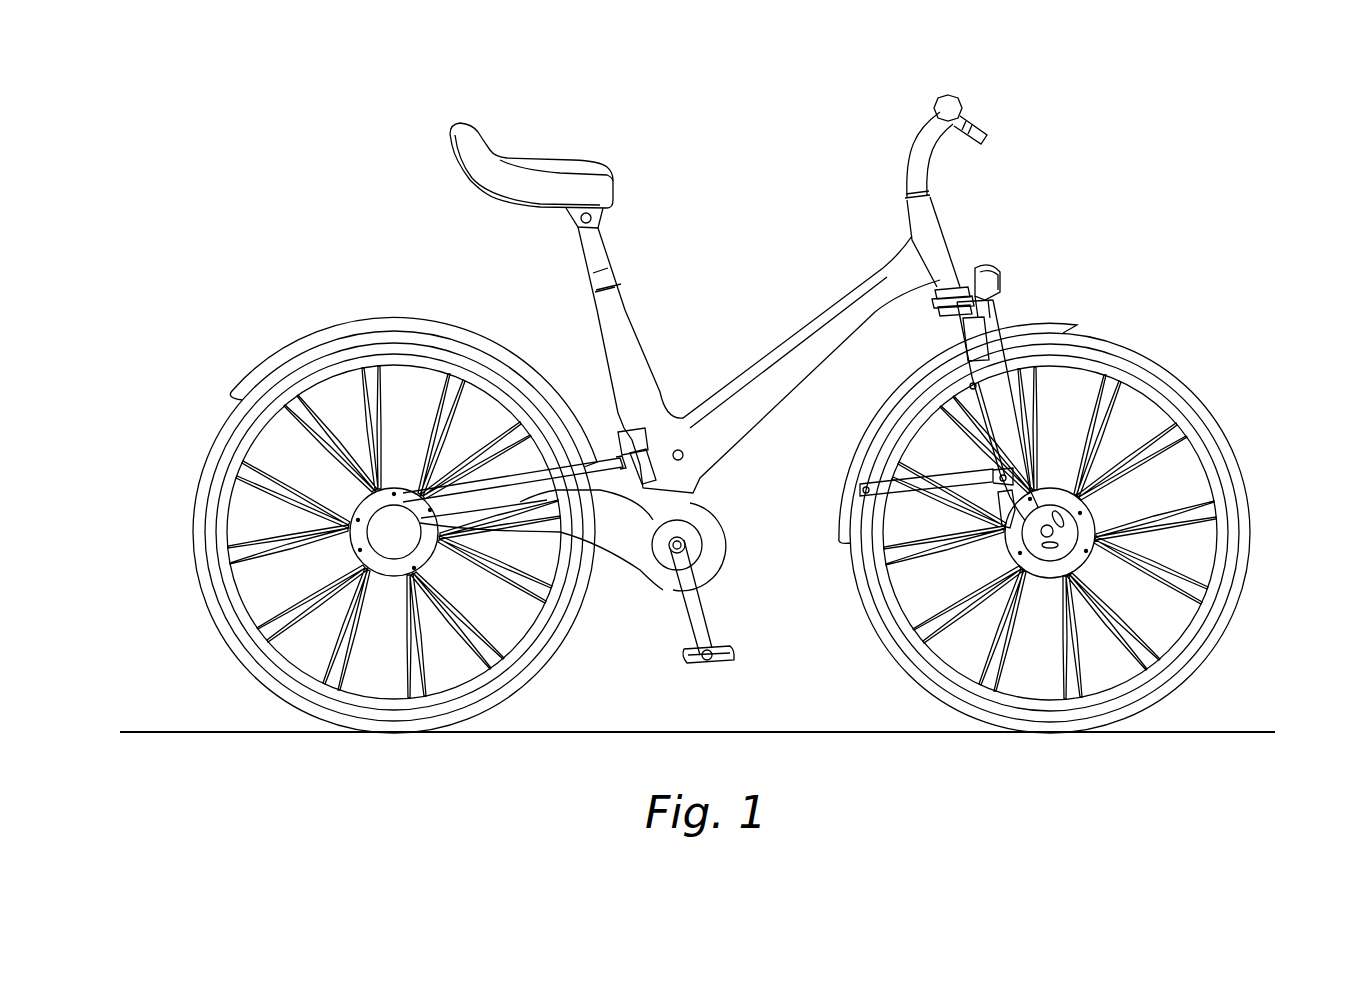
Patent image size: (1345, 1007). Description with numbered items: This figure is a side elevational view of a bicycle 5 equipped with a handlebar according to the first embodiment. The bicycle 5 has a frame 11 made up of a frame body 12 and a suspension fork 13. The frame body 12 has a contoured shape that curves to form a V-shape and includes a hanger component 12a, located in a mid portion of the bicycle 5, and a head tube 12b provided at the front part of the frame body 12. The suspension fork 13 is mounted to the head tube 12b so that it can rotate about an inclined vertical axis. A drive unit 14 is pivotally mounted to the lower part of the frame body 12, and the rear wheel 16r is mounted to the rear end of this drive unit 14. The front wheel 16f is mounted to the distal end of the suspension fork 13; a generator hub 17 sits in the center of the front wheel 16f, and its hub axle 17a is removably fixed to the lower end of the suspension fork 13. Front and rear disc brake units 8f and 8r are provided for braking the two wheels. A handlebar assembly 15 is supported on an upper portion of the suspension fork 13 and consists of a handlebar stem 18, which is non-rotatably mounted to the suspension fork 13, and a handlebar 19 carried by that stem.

The bicycle 5 is at (806, 160).
The front disc brake unit 8f is at (1022, 533).
The rear disc brake unit 8r is at (398, 478).
The frame 11 is at (770, 328).
The frame body 12 is at (806, 378).
The hanger component 12a is at (692, 480).
The head tube 12b is at (935, 240).
The suspension fork 13 is at (1002, 420).
The drive unit 14 is at (642, 566).
The handlebar assembly 15 is at (986, 110).
The front wheel 16f is at (1224, 457).
The rear wheel 16r is at (203, 496).
The generator hub 17 is at (1060, 533).
The hub axle 17a is at (1033, 549).
The handlebar stem 18 is at (918, 175).
The handlebar 19 is at (960, 97).